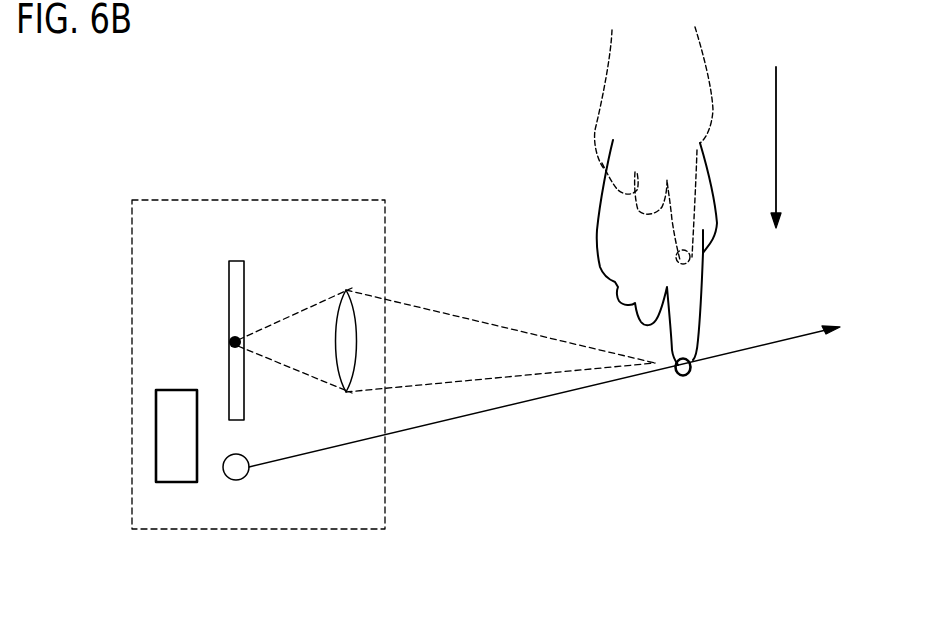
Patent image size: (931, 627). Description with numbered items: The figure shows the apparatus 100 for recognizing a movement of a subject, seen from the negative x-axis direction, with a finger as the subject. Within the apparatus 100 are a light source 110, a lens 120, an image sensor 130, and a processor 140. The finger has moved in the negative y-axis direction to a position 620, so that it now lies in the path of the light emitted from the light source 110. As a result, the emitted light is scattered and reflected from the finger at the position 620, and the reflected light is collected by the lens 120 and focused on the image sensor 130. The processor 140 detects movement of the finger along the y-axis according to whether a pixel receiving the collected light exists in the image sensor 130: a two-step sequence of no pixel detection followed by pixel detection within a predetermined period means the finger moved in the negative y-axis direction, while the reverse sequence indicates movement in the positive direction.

The apparatus 100 is at (262, 199).
The light source 110 is at (236, 480).
The lens 120 is at (346, 290).
The image sensor 130 is at (236, 261).
The processor 140 is at (177, 390).
The position 620 is at (691, 367).